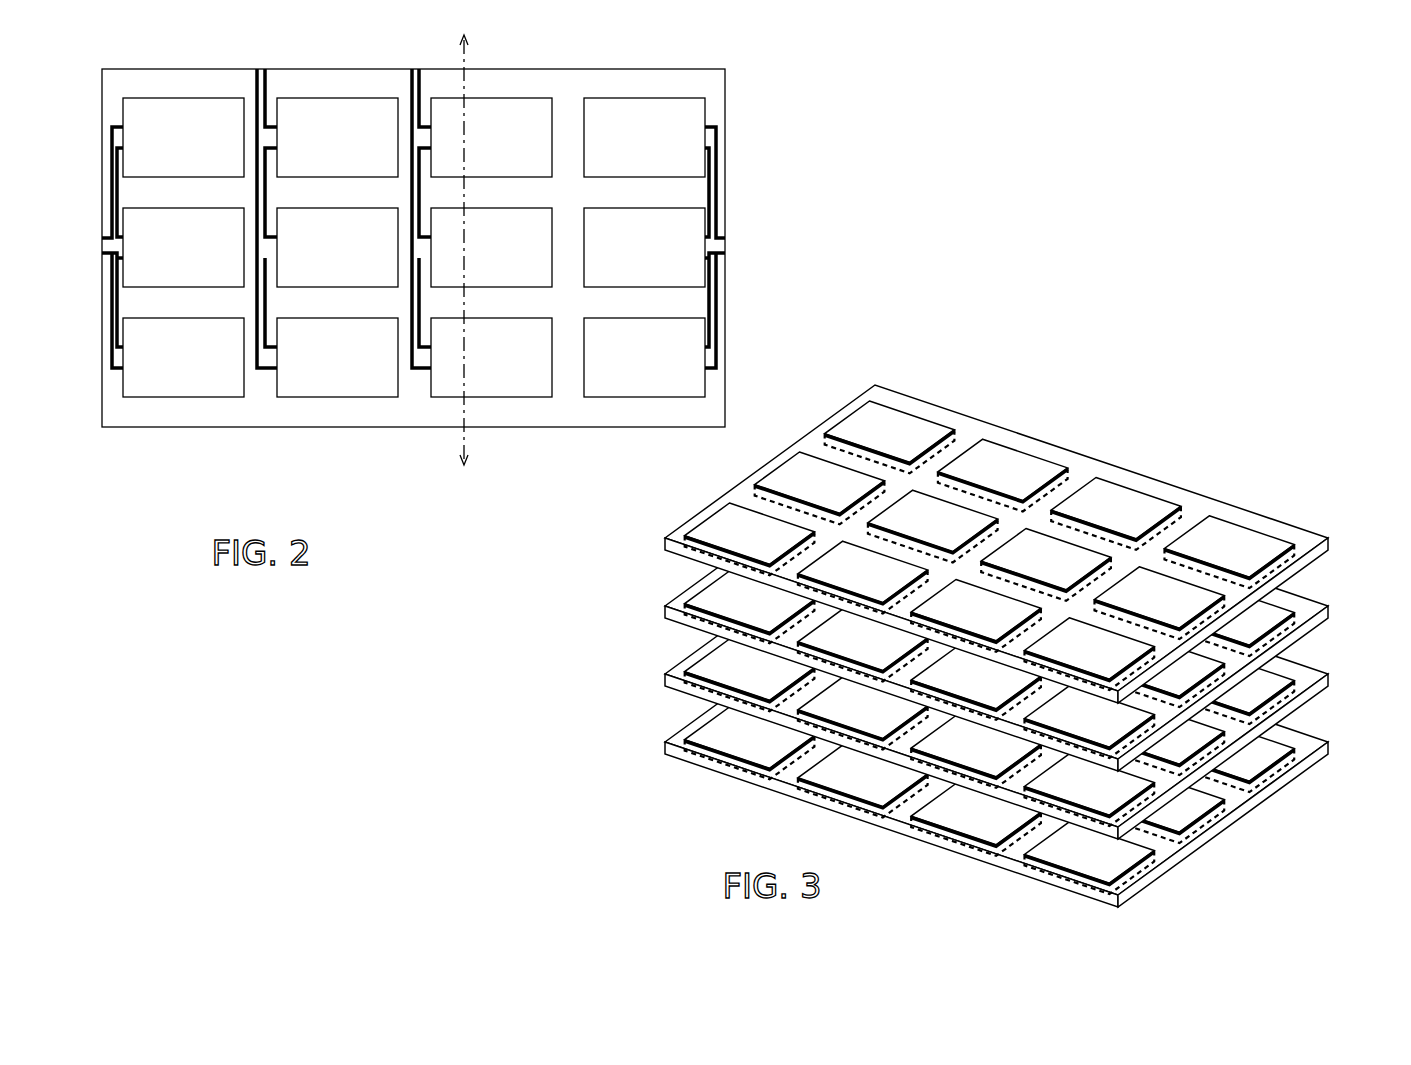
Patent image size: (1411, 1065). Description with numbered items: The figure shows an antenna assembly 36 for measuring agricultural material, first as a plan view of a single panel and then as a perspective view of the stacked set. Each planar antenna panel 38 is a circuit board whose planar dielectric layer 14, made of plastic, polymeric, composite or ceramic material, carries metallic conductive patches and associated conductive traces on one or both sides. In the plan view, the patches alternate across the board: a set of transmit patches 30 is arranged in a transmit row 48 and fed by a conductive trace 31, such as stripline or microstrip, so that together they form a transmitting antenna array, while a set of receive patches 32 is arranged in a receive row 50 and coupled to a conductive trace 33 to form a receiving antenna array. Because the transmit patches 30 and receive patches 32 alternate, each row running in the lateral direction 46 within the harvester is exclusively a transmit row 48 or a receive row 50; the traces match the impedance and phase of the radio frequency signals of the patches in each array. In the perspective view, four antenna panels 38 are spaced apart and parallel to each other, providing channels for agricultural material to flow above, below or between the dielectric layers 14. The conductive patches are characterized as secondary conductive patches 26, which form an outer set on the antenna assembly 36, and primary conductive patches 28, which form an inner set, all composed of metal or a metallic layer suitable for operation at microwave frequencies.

In FIG. 2, the planar dielectric layer 14 is at (172, 83).
In FIG. 3, the secondary conductive patches 26 is at (998, 517).
In FIG. 3, the primary conductive patches 28 is at (1328, 590).
In FIG. 2, the transmit patches 30 is at (323, 148).
In FIG. 3, the transmit patches 30 is at (988, 483).
In FIG. 2, the conductive trace 31 is at (267, 83).
In FIG. 2, the receive patches 32 is at (169, 148).
In FIG. 3, the receive patches 32 is at (875, 445).
In FIG. 2, the conductive trace 33 is at (407, 93).
In FIG. 3, the antenna assembly 36 is at (993, 618).
In FIG. 2, the planar antenna panel 38 is at (433, 263).
In FIG. 3, the planar antenna panel 38 is at (993, 619).
In FIG. 2, the lateral direction 46 is at (466, 188).
In FIG. 2, the transmit row 48 is at (491, 296).
In FIG. 3, the transmit row 48 is at (1065, 530).
In FIG. 2, the receive row 50 is at (337, 296).
In FIG. 3, the receive row 50 is at (954, 491).